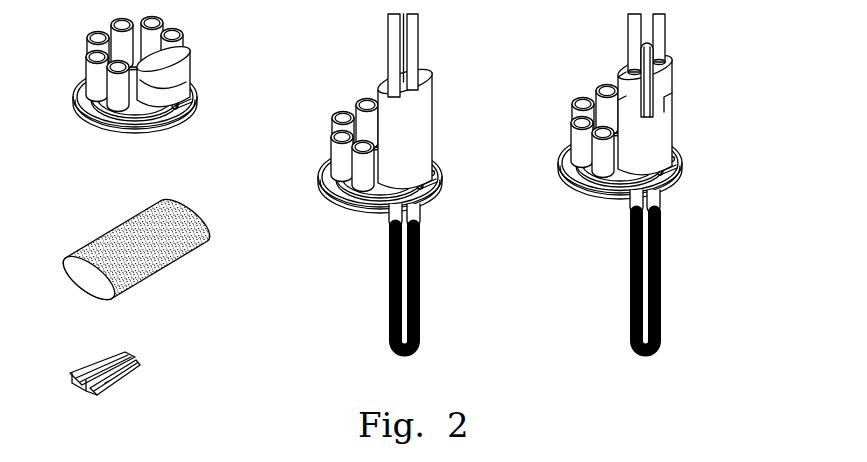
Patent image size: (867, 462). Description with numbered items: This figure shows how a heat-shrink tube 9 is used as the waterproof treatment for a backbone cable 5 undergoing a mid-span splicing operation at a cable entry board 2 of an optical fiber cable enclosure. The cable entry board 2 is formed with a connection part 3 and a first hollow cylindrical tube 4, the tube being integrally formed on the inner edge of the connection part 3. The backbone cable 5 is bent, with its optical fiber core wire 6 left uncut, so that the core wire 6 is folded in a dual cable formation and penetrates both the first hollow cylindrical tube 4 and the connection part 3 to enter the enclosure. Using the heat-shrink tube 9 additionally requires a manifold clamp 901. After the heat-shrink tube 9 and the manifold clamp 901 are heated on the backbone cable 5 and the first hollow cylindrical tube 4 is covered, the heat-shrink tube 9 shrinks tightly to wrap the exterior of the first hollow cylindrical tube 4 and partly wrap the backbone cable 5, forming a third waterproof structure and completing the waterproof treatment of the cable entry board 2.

The cable entry board 2 is at (84, 114).
The connection part 3 is at (197, 95).
The first hollow cylindrical tube 4 is at (188, 58).
The backbone cable 5 is at (388, 60).
The optical fiber core wire 6 is at (420, 330).
The heat-shrink tube 9 is at (108, 222).
The manifold clamp 901 is at (137, 363).